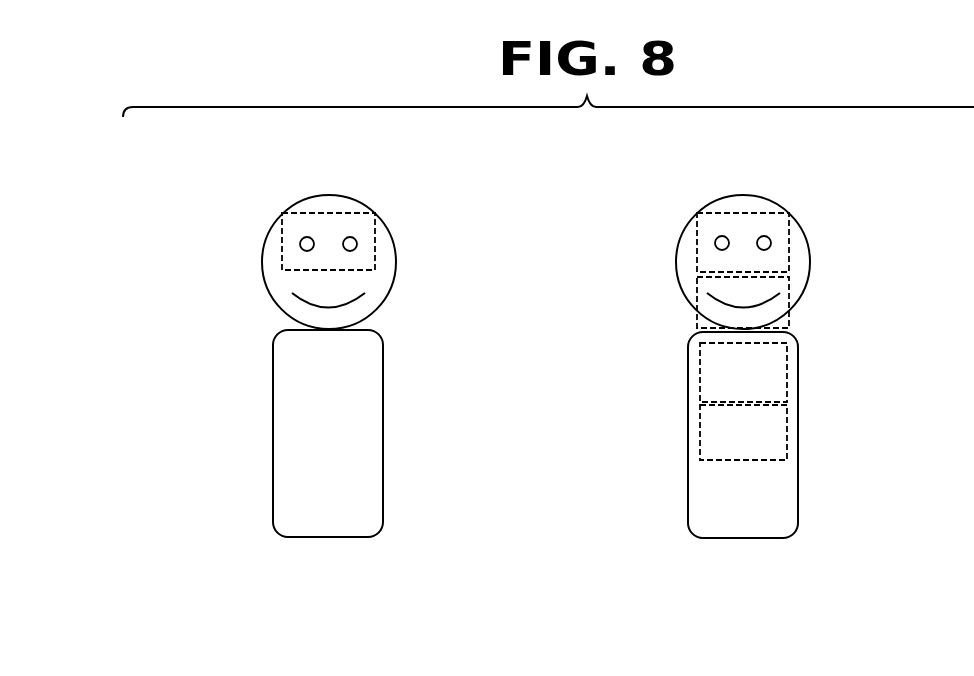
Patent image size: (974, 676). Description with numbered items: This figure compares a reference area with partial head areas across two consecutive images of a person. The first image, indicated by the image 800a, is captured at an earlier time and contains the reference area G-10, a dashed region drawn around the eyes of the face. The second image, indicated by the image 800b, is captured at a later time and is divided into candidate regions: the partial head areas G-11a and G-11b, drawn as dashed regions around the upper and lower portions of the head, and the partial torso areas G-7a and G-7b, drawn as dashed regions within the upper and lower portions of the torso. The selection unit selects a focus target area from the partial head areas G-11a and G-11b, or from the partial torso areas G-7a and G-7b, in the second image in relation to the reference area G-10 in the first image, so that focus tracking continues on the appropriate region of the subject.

The image 800a is at (245, 472).
The image 800b is at (653, 436).
The reference area G-10 is at (375, 238).
The partial head area G-11a is at (805, 235).
The partial head area G-11b is at (688, 300).
The partial torso area G-7a is at (788, 362).
The partial torso area G-7b is at (788, 426).